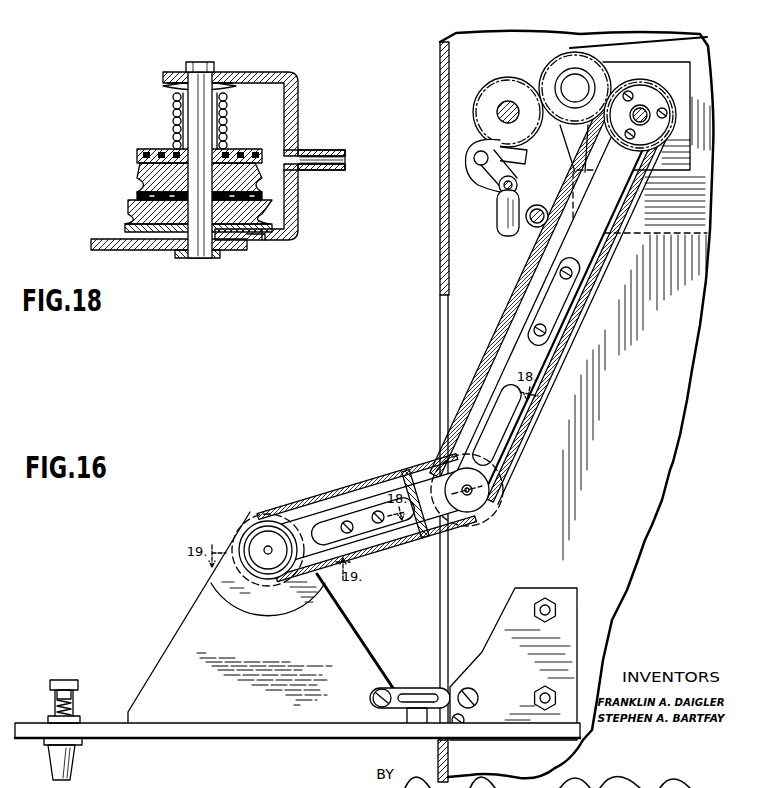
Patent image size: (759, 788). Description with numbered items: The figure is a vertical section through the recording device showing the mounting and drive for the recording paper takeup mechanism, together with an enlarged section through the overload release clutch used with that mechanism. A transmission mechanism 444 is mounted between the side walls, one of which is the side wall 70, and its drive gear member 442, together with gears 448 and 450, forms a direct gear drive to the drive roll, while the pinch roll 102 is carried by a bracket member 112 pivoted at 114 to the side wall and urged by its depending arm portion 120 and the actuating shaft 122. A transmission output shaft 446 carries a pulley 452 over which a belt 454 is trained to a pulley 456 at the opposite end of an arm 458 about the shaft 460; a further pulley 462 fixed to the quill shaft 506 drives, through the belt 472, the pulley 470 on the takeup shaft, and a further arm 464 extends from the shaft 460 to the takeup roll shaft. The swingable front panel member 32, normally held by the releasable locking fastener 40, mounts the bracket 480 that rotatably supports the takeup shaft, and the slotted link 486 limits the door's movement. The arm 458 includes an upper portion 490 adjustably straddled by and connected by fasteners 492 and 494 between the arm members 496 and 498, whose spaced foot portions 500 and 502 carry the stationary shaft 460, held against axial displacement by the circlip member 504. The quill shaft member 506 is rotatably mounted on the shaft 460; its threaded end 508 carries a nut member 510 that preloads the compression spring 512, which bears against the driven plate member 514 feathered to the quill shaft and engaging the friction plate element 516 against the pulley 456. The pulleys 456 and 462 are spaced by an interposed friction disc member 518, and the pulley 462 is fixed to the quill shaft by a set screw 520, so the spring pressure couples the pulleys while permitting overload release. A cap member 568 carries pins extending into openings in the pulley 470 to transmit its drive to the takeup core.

In FIG. 16, the swingable front panel member 32 is at (249, 748).
In FIG. 16, the releasable locking fastener 40 is at (71, 757).
In FIG. 16, the side wall 70 is at (622, 440).
In FIG. 16, the pinch roll 102 is at (481, 181).
In FIG. 16, the bracket member 112 is at (530, 192).
In FIG. 16, the pivot 114 is at (514, 186).
In FIG. 16, the depending arm portion 120 is at (504, 230).
In FIG. 16, the actuating shaft 122 is at (536, 228).
In FIG. 16, the drive gear member 442 is at (510, 80).
In FIG. 16, the transmission mechanism 444 is at (608, 35).
In FIG. 16, the transmission output shaft 446 is at (648, 118).
In FIG. 16, the gear 448 is at (634, 78).
In FIG. 16, the gear 450 is at (548, 66).
In FIG. 16, the pulley 452 is at (690, 166).
In FIG. 16, the belt 454 is at (540, 420).
In FIG. 18, the pulley 456 is at (162, 184).
In FIG. 18, the arm 458 is at (374, 148).
In FIG. 16, the arm 458 is at (607, 270).
In FIG. 18, the shaft 460 is at (202, 145).
In FIG. 16, the shaft 460 is at (490, 500).
In FIG. 18, the pulley 462 is at (128, 224).
In FIG. 16, the pulley 462 is at (478, 519).
In FIG. 18, the arm 464 is at (146, 259).
In FIG. 16, the arm 464 is at (373, 490).
In FIG. 16, the pulley 470 is at (273, 532).
In FIG. 16, the belt 472 is at (407, 470).
In FIG. 16, the bracket 480 is at (352, 641).
In FIG. 16, the slotted link 486 is at (462, 690).
In FIG. 16, the upper portion of arm 490 is at (589, 205).
In FIG. 16, the fastener 492 is at (586, 284).
In FIG. 16, the fastener 494 is at (549, 334).
In FIG. 18, the arm member 496 is at (372, 148).
In FIG. 18, the arm member 498 is at (320, 172).
In FIG. 18, the foot portion 500 is at (258, 73).
In FIG. 18, the foot portion 502 is at (279, 242).
In FIG. 18, the circlip member 504 is at (218, 72).
In FIG. 18, the quill shaft member 506 is at (172, 124).
In FIG. 18, the threaded end 508 is at (172, 98).
In FIG. 18, the nut member 510 is at (198, 88).
In FIG. 18, the compression spring 512 is at (228, 107).
In FIG. 18, the driven plate member 514 is at (282, 150).
In FIG. 18, the friction plate element 516 is at (140, 158).
In FIG. 18, the friction disc member 518 is at (140, 196).
In FIG. 18, the set screw 520 is at (257, 243).
In FIG. 16, the cap member 568 is at (262, 518).